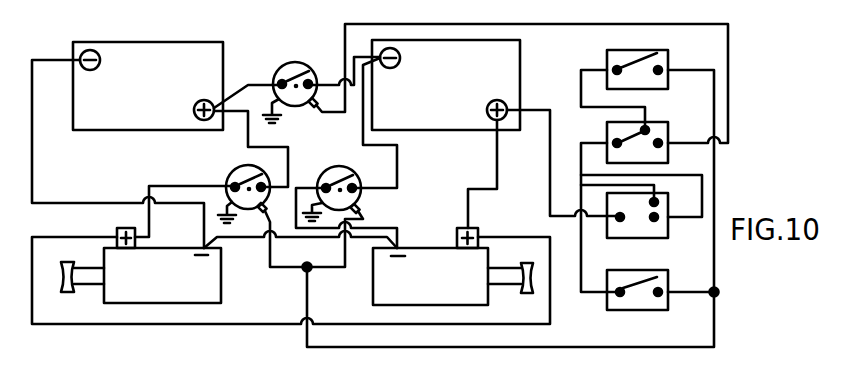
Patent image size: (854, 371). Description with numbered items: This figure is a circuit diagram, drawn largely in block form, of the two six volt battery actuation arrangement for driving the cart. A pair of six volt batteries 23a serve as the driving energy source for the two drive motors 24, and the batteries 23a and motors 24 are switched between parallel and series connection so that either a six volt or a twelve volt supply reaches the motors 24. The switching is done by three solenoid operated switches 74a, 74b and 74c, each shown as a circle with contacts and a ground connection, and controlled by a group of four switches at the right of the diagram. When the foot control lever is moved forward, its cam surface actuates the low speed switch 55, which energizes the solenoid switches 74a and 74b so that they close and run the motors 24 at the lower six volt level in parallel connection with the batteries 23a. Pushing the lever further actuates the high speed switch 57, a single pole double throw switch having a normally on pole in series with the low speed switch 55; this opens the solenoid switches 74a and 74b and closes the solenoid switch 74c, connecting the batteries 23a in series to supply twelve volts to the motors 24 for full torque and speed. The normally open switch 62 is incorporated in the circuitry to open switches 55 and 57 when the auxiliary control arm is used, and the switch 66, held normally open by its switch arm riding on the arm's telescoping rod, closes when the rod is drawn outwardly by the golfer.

The six volt battery 23a is at (173, 53).
The motor 24 is at (168, 257).
The solenoid operated switch 74a is at (327, 167).
The solenoid operated switch 74b is at (233, 167).
The solenoid operated switch 74c is at (292, 62).
The low speed switch 55 is at (672, 58).
The high speed switch 57 is at (668, 127).
The normally open switch 62 is at (657, 230).
The switch 66 is at (643, 310).